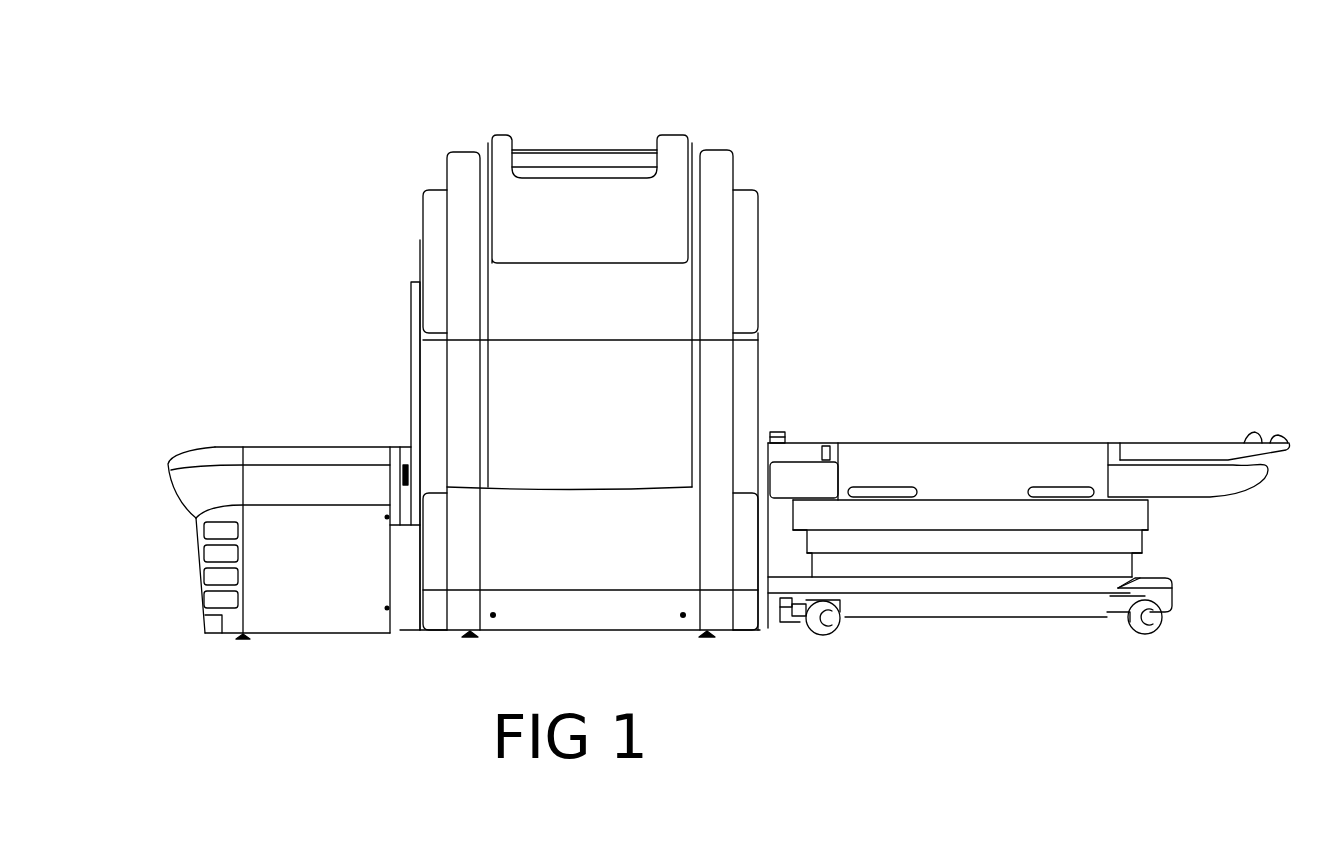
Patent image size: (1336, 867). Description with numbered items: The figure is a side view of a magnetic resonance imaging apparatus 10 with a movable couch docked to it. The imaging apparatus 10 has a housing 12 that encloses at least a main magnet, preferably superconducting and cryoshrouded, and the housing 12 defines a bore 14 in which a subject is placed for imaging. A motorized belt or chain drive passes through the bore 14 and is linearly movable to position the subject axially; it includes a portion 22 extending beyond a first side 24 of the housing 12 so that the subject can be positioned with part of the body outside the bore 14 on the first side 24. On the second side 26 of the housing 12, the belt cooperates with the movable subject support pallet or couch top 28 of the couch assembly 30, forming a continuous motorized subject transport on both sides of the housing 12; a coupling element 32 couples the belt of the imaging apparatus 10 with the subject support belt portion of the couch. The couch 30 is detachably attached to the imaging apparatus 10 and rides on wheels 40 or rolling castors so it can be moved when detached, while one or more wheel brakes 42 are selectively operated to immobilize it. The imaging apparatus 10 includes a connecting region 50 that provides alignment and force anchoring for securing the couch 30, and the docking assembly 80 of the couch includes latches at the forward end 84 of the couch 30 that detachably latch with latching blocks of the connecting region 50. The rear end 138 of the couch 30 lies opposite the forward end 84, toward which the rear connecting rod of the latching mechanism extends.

The magnetic resonance imaging apparatus 10 is at (853, 155).
The housing 12 is at (593, 218).
The bore 14 is at (772, 407).
The portion of motorized belt 22 is at (291, 425).
The first side 24 is at (388, 330).
The second side 26 is at (795, 322).
The couch top 28 is at (1158, 443).
The couch assembly 30 is at (1047, 380).
The coupling element 32 is at (786, 433).
The wheels 40 is at (835, 636).
The wheel brake 42 is at (1135, 583).
The connecting region 50 is at (781, 607).
The docking assembly 80 is at (963, 625).
The forward end 84 is at (798, 655).
The rear end 138 is at (1073, 643).